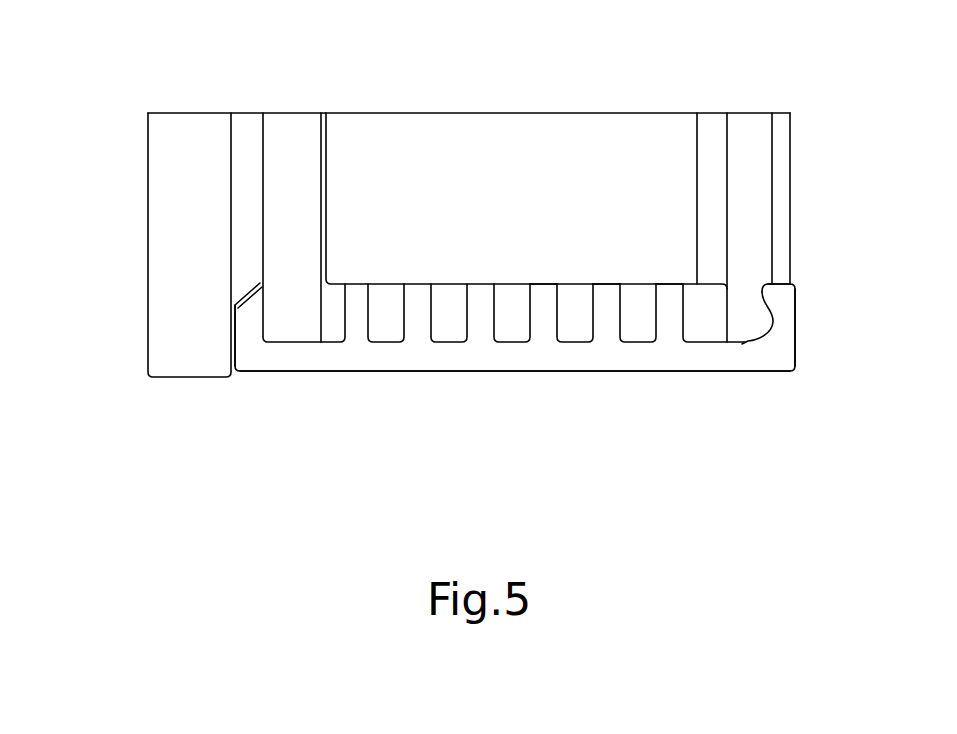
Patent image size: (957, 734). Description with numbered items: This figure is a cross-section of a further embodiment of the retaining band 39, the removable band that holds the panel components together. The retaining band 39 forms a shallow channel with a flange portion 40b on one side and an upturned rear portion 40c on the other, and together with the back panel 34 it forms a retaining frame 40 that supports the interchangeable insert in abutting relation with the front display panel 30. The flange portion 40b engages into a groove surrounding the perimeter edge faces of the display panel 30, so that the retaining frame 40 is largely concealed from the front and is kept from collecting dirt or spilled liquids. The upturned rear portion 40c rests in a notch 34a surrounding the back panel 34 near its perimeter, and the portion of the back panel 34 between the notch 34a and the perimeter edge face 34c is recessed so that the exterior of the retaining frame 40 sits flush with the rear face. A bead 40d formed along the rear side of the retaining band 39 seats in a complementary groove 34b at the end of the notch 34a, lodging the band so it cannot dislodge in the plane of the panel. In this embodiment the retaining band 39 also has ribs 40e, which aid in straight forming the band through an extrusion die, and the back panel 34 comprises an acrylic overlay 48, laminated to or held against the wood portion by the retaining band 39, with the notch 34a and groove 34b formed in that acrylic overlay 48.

The display panel 30 is at (168, 240).
The back panel 34 is at (505, 135).
The notch 34a is at (742, 345).
The groove 34b is at (760, 298).
The perimeter edge face 34c is at (450, 341).
The retaining band 39 is at (541, 371).
The retaining frame 40 is at (799, 370).
The flange portion 40b is at (237, 328).
The upturned rear portion 40c is at (797, 324).
The bead 40d is at (786, 293).
The ribs 40e is at (670, 285).
The overlay 48 is at (758, 200).